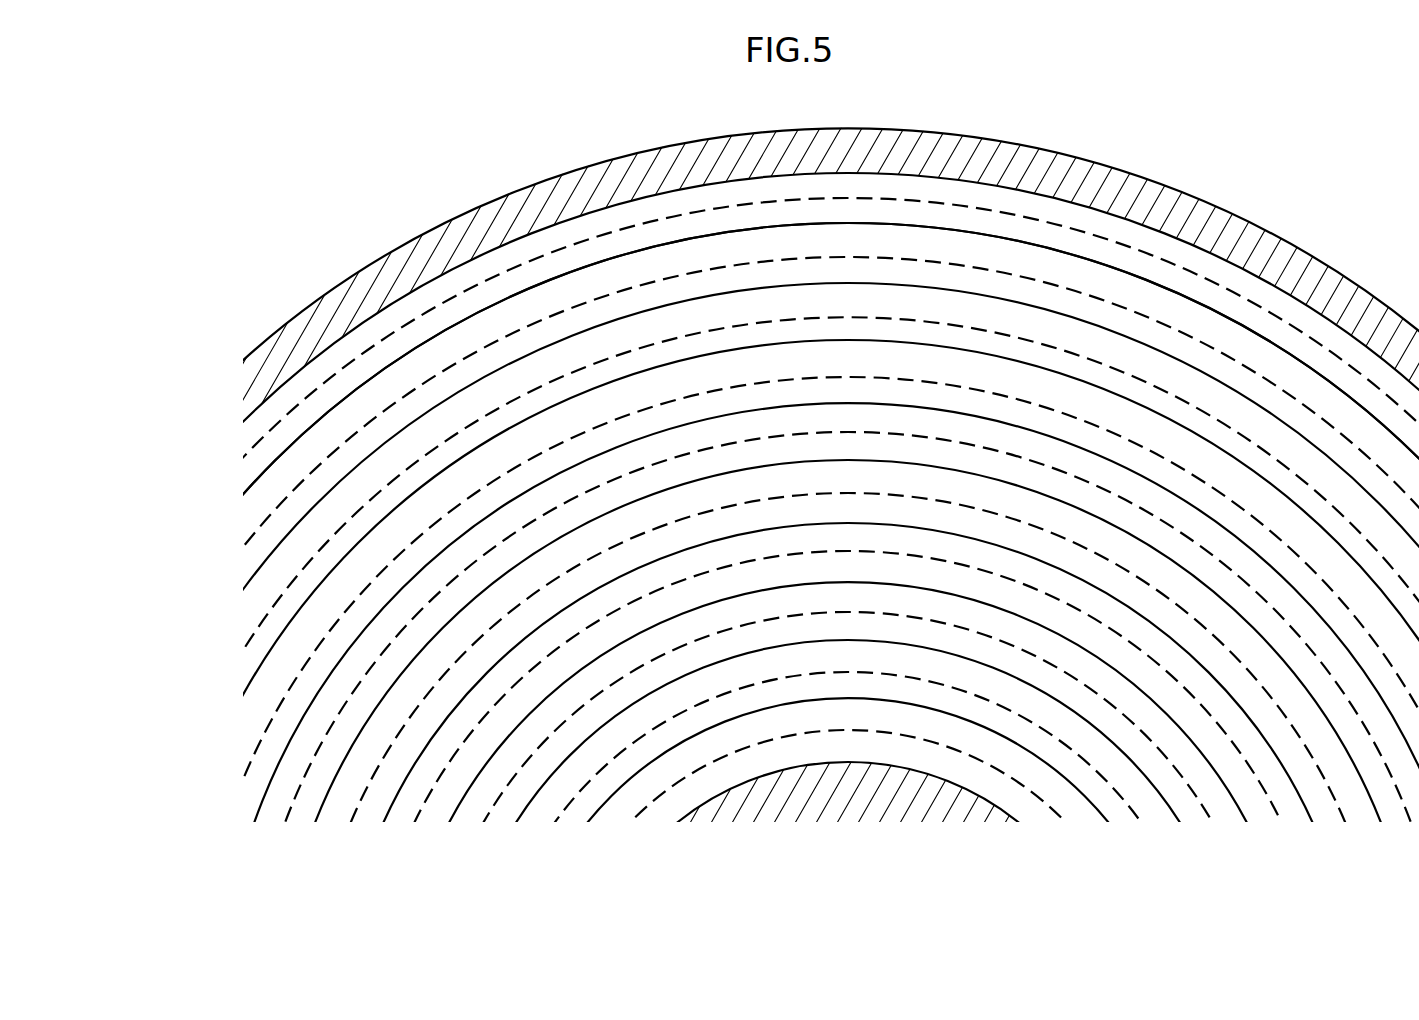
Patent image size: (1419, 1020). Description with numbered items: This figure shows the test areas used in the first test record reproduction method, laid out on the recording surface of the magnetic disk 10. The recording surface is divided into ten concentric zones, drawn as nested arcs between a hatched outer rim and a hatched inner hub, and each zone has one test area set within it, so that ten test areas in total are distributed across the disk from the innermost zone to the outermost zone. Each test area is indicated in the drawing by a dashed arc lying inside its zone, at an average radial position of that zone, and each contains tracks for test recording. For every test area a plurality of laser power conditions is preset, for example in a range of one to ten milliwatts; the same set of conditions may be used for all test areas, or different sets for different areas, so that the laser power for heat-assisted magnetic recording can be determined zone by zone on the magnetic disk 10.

The magnetic disk 10 is at (335, 204).